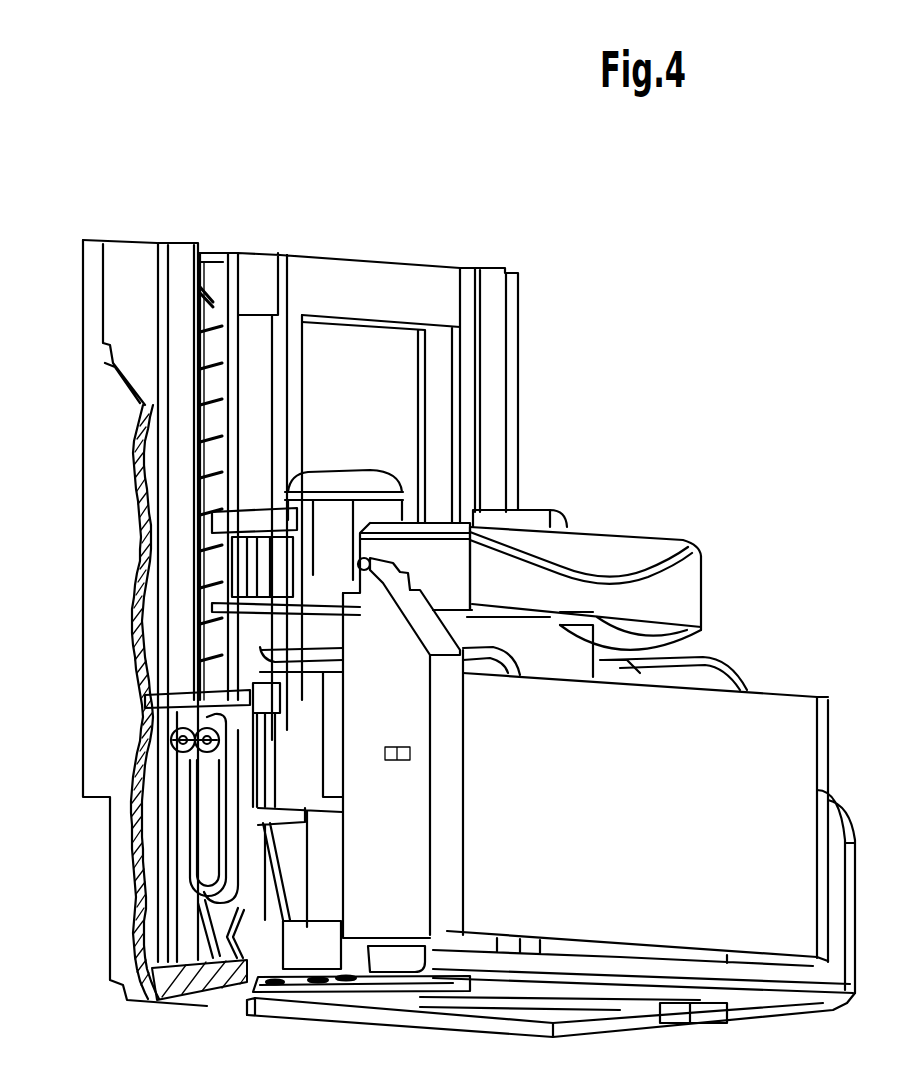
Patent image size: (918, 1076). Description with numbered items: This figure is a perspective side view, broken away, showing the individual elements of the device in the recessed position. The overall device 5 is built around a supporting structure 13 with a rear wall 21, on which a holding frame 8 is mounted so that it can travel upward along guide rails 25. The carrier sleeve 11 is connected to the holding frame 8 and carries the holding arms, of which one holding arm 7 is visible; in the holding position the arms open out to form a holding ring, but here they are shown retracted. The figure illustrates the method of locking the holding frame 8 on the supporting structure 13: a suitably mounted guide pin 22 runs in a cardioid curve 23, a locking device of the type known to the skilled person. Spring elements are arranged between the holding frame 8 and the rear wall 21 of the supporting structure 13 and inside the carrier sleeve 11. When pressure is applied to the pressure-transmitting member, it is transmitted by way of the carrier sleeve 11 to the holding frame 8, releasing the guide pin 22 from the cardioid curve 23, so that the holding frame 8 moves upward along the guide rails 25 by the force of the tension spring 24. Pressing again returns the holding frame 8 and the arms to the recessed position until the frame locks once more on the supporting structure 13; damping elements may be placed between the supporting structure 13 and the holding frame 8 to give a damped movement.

The base station 5 is at (98, 133).
The holding arm 7 is at (652, 550).
The holding frame 8 is at (788, 708).
The carrier sleeve 11 is at (400, 503).
The supporting structure 13 is at (100, 623).
The rear wall 21 is at (368, 260).
The guide pin 22 is at (200, 870).
The cardioid curve 23 is at (222, 932).
The tension spring 24 is at (222, 318).
The guide rails 25 is at (178, 253).